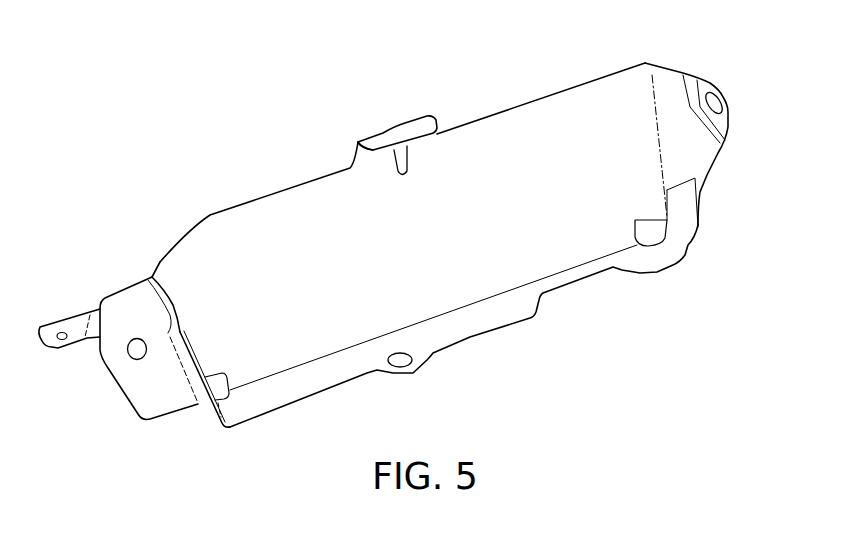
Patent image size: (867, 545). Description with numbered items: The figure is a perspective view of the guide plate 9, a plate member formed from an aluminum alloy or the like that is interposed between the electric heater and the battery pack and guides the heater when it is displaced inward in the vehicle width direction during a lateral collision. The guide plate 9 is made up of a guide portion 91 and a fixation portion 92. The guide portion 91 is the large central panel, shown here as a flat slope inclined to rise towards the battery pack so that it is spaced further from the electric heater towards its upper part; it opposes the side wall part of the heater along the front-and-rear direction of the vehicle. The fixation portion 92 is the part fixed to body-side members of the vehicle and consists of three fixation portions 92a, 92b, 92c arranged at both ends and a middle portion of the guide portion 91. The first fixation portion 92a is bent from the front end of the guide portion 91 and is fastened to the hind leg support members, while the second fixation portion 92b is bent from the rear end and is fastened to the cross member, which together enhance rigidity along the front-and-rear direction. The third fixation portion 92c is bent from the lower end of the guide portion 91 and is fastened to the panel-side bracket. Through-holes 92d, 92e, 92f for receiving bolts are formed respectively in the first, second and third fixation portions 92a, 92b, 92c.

The guide plate 9 is at (612, 68).
The guide portion 91 is at (525, 125).
The fixation portion 92 is at (401, 234).
The first fixation portion 92a is at (123, 302).
The second fixation portion 92b is at (668, 92).
The third fixation portion 92c is at (500, 318).
The through-hole 92d is at (129, 353).
The through-hole 92e is at (717, 100).
The through-hole 92f is at (400, 354).